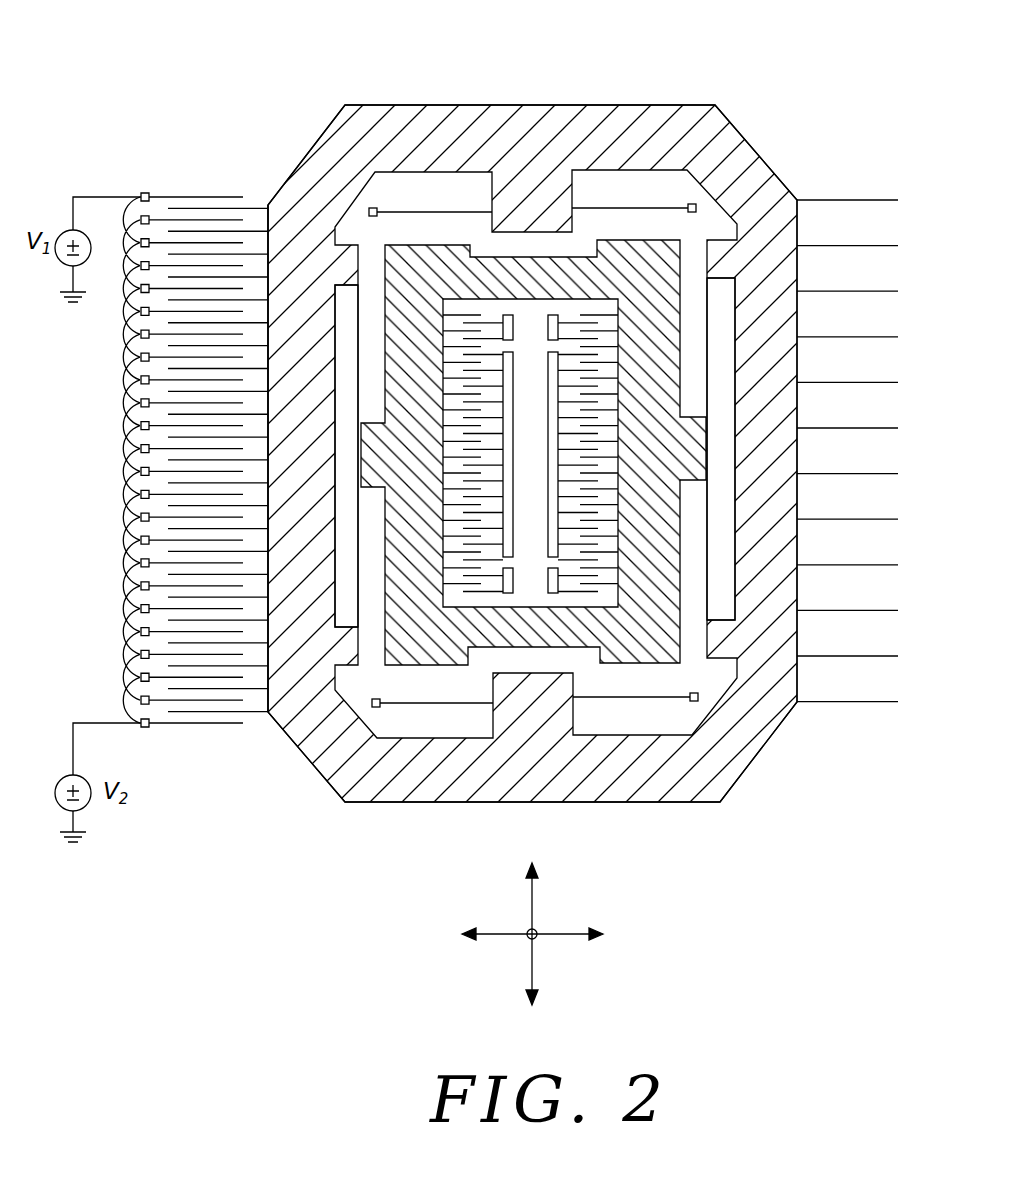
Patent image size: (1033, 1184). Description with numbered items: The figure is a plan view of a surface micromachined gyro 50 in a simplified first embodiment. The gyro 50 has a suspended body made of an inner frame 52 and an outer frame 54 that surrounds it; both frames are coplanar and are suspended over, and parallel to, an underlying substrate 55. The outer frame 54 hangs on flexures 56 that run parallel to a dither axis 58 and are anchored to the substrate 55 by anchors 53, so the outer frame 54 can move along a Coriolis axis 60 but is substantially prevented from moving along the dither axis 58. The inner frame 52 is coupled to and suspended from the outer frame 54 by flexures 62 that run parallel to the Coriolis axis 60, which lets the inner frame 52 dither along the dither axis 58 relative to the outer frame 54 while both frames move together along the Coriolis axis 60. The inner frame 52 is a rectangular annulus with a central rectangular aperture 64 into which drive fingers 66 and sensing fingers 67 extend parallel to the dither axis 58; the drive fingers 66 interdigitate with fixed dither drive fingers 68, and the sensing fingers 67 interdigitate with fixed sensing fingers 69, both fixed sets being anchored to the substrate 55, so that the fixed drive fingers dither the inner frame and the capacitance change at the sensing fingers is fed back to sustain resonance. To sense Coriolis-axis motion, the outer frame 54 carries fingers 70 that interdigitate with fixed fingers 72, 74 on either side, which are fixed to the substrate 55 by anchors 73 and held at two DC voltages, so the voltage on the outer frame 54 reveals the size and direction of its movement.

The surface micromachined gyro 50 is at (602, 36).
The inner frame 52 is at (433, 280).
The anchors 53 is at (372, 207).
The outer frame 54 is at (416, 145).
The substrate 55 is at (836, 153).
The flexures 56 is at (447, 213).
The dither axis 58 is at (573, 935).
The Coriolis axis 60 is at (530, 888).
The flexures 62 is at (355, 342).
The central rectangular aperture 64 is at (546, 400).
The drive fingers 66 is at (590, 542).
The sensing fingers 67 is at (597, 323).
The fixed dither drive fingers 68 is at (493, 458).
The fixed sensing fingers 69 is at (572, 318).
The fingers 70 is at (266, 207).
The fixed fingers 72 is at (182, 195).
The anchors 73 is at (153, 150).
The fixed fingers 74 is at (234, 213).